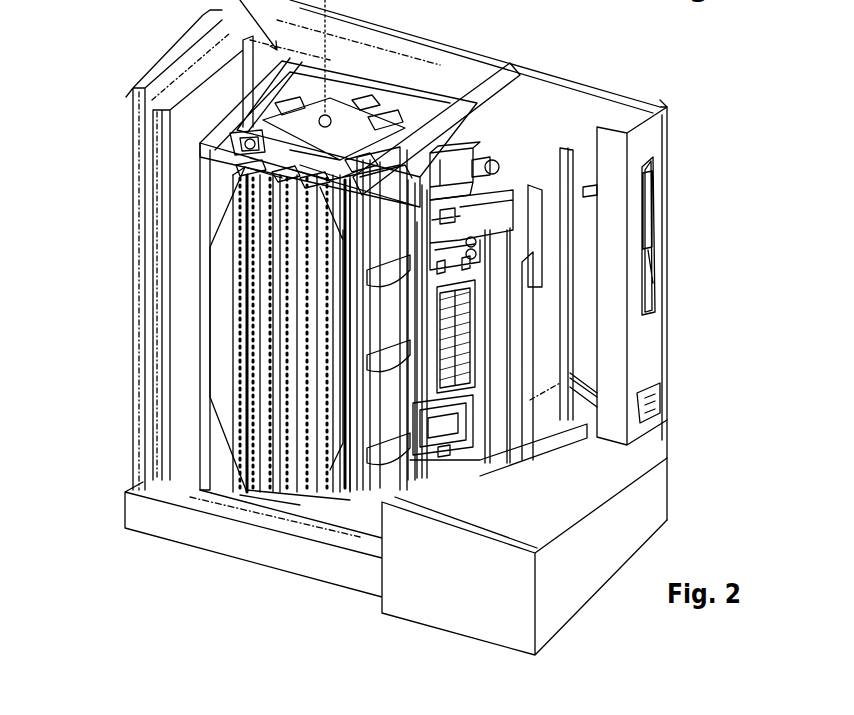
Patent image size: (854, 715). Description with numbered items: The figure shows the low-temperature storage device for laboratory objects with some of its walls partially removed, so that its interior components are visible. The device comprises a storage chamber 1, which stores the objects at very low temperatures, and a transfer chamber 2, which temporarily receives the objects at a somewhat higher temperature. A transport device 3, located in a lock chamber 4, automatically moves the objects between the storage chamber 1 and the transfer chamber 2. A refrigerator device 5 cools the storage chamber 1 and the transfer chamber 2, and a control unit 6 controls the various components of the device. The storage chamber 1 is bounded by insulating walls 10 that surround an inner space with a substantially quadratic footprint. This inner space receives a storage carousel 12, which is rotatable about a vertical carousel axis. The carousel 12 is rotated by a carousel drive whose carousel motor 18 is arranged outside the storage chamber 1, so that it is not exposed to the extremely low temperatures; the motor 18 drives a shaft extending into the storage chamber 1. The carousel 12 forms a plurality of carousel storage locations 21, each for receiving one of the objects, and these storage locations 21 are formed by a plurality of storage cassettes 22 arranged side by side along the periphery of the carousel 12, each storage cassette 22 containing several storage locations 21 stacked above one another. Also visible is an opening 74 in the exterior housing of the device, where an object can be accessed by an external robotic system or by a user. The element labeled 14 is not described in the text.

The storage chamber 1 is at (218, 63).
The transfer chamber 2 is at (552, 163).
The transport device 3 is at (453, 170).
The lock chamber 4 is at (235, 140).
The refrigerator device 5 is at (653, 482).
The control unit 6 is at (647, 407).
The insulating walls 10 is at (143, 138).
The storage carousel 12 is at (248, 506).
The rack frame 14 is at (207, 202).
The carousel motor 18 is at (487, 163).
The carousel storage locations 21 is at (295, 503).
The storage cassettes 22 is at (293, 503).
The opening 74 is at (462, 437).